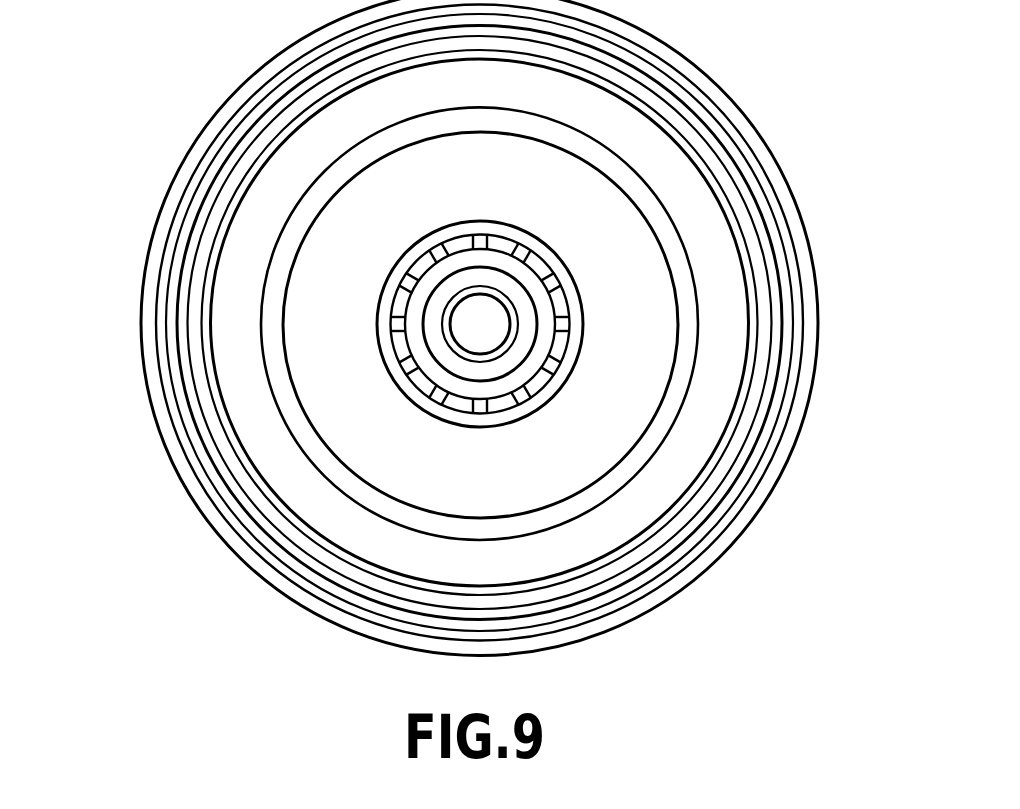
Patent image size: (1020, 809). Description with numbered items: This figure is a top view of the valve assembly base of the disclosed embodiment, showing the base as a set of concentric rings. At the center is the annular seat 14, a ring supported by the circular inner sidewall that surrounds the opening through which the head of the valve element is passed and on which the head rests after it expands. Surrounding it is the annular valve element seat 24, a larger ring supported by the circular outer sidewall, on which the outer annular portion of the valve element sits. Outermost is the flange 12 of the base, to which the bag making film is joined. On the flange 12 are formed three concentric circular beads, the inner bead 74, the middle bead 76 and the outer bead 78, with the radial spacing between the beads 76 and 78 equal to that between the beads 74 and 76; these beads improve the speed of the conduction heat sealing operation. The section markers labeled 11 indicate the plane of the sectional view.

The flange 12 is at (757, 193).
The outer circular bead 78 is at (787, 238).
The middle circular bead 76 is at (772, 278).
The inner circular bead 74 is at (755, 322).
The annular valve element seat 24 is at (352, 212).
The annular seat 14 is at (440, 312).
The section line 11- 11 is at (107, 322).